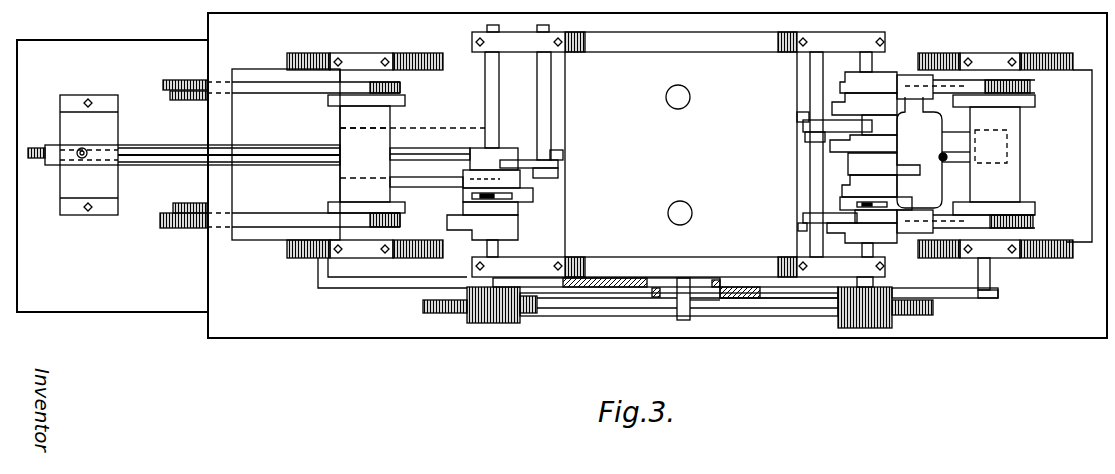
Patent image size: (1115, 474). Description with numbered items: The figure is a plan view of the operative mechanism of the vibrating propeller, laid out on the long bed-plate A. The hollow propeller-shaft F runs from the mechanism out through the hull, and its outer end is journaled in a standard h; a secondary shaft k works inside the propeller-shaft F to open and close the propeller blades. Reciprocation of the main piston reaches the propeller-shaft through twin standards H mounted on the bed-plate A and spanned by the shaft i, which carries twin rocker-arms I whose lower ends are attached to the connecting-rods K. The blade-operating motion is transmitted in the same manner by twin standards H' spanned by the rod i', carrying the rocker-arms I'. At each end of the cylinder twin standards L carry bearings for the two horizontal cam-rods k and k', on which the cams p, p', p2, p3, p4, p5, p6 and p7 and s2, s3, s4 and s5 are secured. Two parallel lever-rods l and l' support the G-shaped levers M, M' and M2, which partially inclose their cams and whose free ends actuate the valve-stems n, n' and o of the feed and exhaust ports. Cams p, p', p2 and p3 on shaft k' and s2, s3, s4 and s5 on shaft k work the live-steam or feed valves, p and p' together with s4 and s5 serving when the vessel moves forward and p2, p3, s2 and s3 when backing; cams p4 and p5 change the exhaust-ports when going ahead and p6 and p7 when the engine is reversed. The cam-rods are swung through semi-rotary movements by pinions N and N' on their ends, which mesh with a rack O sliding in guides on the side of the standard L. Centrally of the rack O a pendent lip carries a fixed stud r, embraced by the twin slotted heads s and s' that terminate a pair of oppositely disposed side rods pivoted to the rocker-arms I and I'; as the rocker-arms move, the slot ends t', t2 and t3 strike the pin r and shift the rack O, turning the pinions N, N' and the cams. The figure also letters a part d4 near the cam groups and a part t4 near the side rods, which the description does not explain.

The bed-plate A is at (562, 175).
The standard h is at (89, 155).
The propeller-shaft F is at (192, 142).
The secondary shaft k is at (270, 120).
The rocker-arms I is at (196, 153).
The connecting-rods K is at (247, 105).
The shaft i is at (399, 154).
The twin standards H is at (373, 161).
The twin standards L is at (678, 151).
The lever-rod l is at (544, 106).
The cam s5 is at (494, 159).
The cam s4 is at (491, 179).
The clamp bar d4 is at (912, 194).
The cam s3 is at (468, 212).
The cam s2 is at (482, 236).
The G-shaped lever M' is at (546, 173).
The valve-stem n' is at (568, 145).
The lever-rod l' is at (816, 154).
The cam-rod k' is at (882, 56).
The valve-stem o is at (797, 113).
The G-shaped lever M2 is at (803, 126).
The cam p7 is at (868, 82).
The cam p6 is at (864, 104).
The cam p5 is at (879, 125).
The cam p4 is at (863, 144).
The cam p3 is at (884, 164).
The cam p2 is at (869, 186).
The cam p' is at (876, 217).
The cam p is at (862, 255).
The G-shaped lever M is at (812, 209).
The valve-stem n is at (788, 235).
The rod i' is at (966, 154).
The rocker-arms I' is at (1047, 156).
The twin standards H' is at (982, 165).
The fixed stud r is at (683, 312).
The slotted head s is at (675, 279).
The slot end t' is at (606, 305).
The slot end t3 is at (665, 298).
The slot end t2 is at (715, 280).
The slotted head s' is at (705, 318).
The rail t4 is at (727, 298).
The pinion N is at (493, 325).
The pinion N' is at (863, 326).
The rack O is at (423, 308).